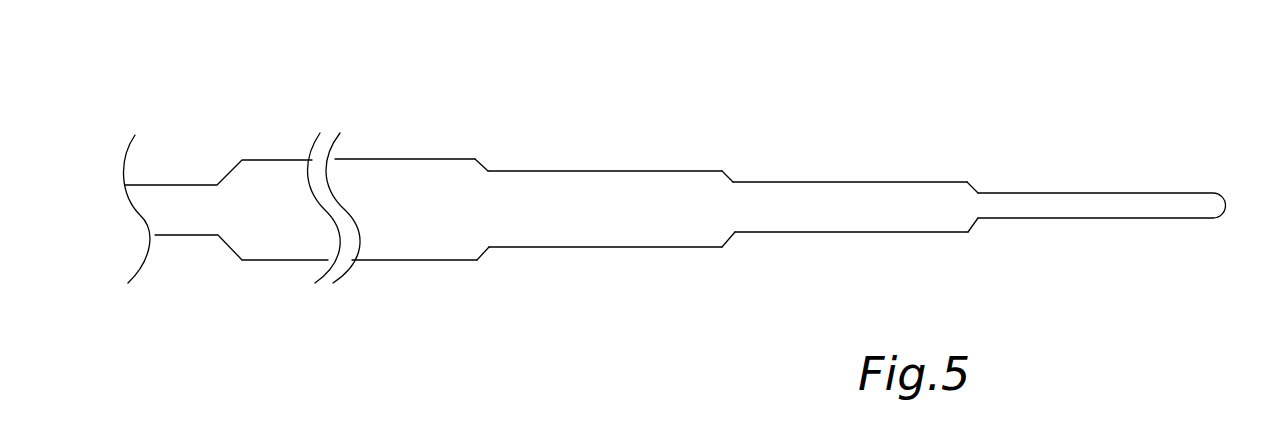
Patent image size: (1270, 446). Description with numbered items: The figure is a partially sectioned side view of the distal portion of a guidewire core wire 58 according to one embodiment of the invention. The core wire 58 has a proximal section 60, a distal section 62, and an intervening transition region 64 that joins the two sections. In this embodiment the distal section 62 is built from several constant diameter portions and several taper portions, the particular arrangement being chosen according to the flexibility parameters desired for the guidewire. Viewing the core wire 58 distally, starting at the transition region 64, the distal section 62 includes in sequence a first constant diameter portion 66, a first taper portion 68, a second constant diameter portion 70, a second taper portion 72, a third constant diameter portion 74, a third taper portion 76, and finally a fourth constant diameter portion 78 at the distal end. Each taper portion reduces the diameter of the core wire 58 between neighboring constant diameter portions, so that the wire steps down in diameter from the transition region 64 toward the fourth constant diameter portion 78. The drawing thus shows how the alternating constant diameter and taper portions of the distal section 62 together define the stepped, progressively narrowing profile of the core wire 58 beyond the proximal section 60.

The core wire 58 is at (658, 170).
The proximal section 60 is at (177, 138).
The distal section 62 is at (862, 142).
The transition region 64 is at (232, 168).
The first constant diameter portion 66 is at (385, 238).
The first taper portion 68 is at (477, 258).
The second constant diameter portion 70 is at (628, 232).
The second taper portion 72 is at (732, 230).
The third constant diameter portion 74 is at (853, 220).
The third taper portion 76 is at (968, 222).
The fourth constant diameter portion 78 is at (1120, 213).